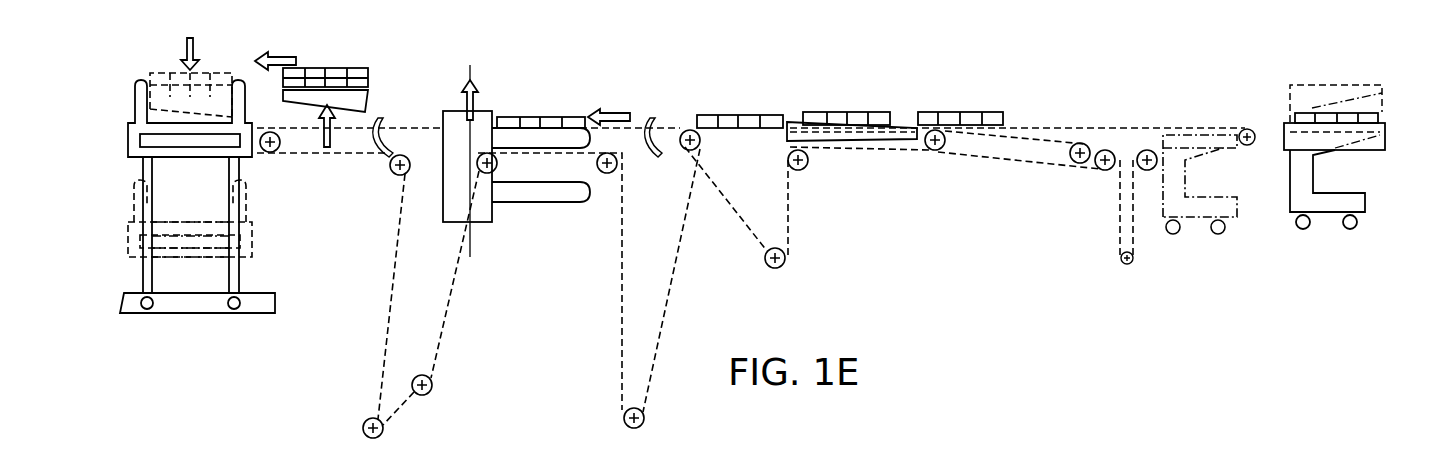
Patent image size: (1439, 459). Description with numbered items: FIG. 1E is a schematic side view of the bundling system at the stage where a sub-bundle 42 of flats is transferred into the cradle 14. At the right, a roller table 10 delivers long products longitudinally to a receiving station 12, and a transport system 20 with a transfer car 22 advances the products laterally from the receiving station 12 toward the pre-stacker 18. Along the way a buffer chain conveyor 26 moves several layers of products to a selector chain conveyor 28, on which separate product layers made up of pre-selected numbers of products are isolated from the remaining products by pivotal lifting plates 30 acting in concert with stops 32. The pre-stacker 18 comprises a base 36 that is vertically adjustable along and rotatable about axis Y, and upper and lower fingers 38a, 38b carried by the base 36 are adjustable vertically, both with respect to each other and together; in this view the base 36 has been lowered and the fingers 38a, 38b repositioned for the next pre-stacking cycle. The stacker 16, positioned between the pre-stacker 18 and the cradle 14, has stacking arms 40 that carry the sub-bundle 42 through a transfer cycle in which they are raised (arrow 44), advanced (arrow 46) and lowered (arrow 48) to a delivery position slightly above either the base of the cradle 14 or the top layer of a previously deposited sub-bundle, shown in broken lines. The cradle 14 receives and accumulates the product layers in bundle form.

The roller table 10 is at (1353, 144).
The receiving station 12 is at (1335, 76).
The cradle 14 is at (128, 140).
The stacker 16 is at (349, 114).
The pre-stacker 18 is at (531, 238).
The transport system 20 is at (897, 166).
The transfer car 22 is at (1367, 203).
The buffer chain conveyor 26 is at (1145, 126).
The selector chain conveyor 28 is at (1030, 166).
The pivotal lifting plates 30 is at (893, 140).
The stops 32 is at (651, 160).
The base 36 is at (478, 222).
The upper fingers 38a is at (534, 202).
The lower fingers 38b is at (533, 128).
The stacking arms 40 is at (366, 103).
The sub-bundle 42 is at (368, 70).
The arrow (raising of stacking arms) 44 is at (327, 150).
The arrow (advancing of stacking arms) 46 is at (282, 56).
The arrow (lowering of stacking arms) 48 is at (195, 47).